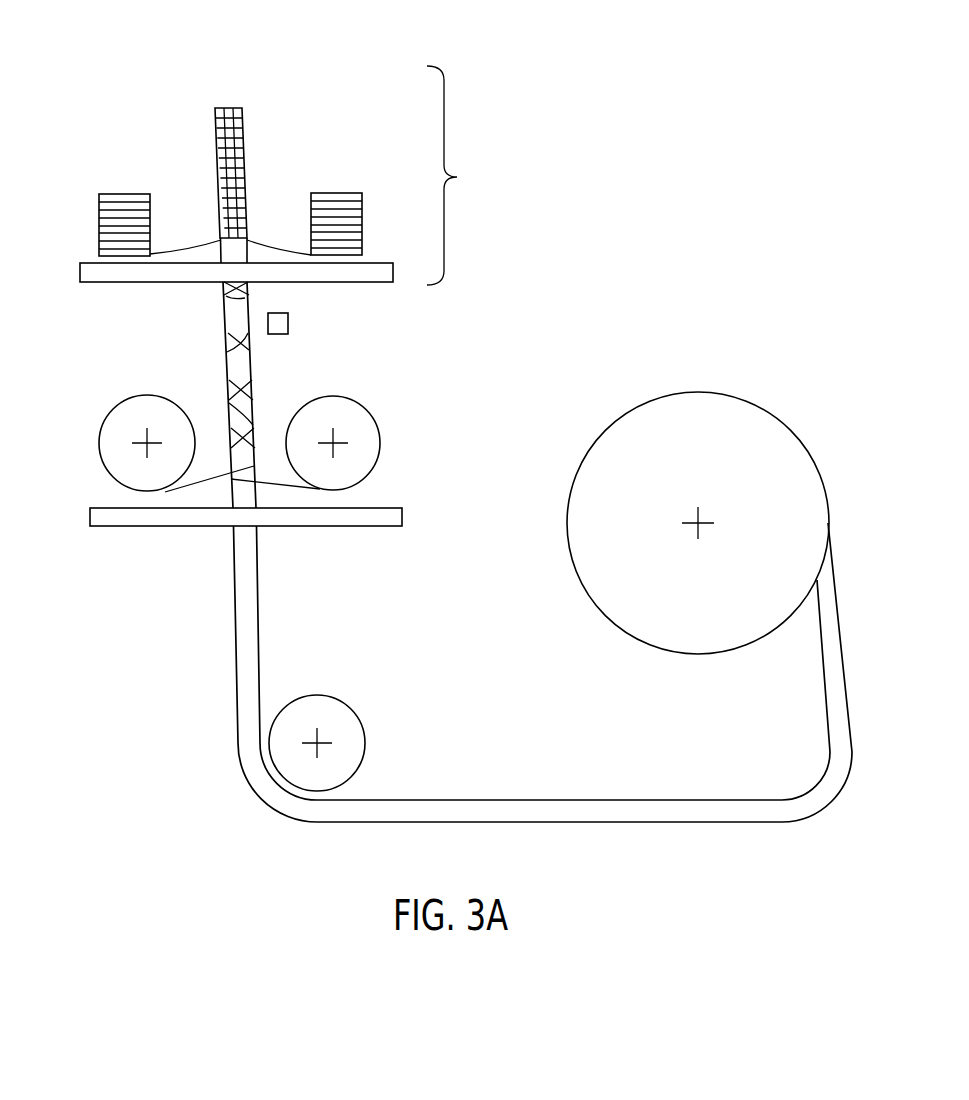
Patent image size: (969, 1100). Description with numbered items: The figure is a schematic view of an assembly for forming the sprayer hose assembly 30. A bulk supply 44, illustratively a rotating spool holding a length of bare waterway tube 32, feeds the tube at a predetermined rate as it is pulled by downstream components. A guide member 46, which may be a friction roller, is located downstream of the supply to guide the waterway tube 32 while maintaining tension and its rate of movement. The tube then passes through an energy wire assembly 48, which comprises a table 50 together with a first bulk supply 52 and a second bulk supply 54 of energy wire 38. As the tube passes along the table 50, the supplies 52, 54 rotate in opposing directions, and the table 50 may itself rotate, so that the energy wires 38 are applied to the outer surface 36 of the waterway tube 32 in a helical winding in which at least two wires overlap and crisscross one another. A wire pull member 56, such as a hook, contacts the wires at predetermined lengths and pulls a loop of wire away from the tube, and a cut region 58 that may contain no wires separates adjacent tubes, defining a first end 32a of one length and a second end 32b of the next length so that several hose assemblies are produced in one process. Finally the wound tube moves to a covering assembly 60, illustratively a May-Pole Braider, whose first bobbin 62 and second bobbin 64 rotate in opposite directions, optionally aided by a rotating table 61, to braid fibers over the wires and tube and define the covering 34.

The sprayer hose assembly 30 is at (186, 91).
The waterway tube 32 is at (557, 807).
The first end 32a is at (252, 290).
The second end 32b is at (216, 339).
The covering 34 is at (245, 146).
The outer surface 36 is at (240, 364).
The energy wire 38 is at (228, 348).
The bulk supply 44 is at (768, 410).
The guide member 46 is at (325, 695).
The energy wire assembly 48 is at (401, 425).
The table 50 is at (372, 527).
The first bulk supply 52 is at (380, 460).
The second bulk supply 54 is at (105, 463).
The wire pull member 56 is at (288, 325).
The cut region 58 is at (235, 303).
The covering assembly 60 is at (455, 175).
The table 61 is at (387, 268).
The first bobbin 62 is at (362, 205).
The second bobbin 64 is at (150, 204).